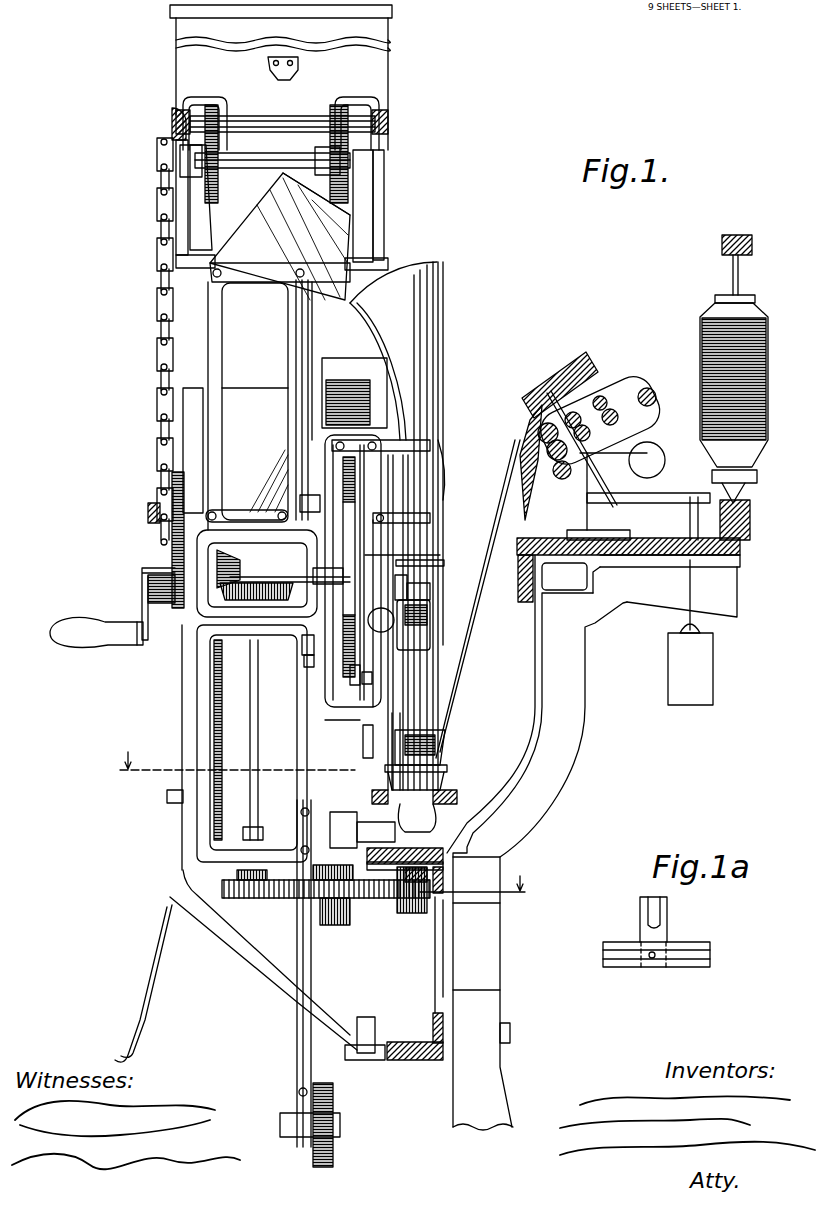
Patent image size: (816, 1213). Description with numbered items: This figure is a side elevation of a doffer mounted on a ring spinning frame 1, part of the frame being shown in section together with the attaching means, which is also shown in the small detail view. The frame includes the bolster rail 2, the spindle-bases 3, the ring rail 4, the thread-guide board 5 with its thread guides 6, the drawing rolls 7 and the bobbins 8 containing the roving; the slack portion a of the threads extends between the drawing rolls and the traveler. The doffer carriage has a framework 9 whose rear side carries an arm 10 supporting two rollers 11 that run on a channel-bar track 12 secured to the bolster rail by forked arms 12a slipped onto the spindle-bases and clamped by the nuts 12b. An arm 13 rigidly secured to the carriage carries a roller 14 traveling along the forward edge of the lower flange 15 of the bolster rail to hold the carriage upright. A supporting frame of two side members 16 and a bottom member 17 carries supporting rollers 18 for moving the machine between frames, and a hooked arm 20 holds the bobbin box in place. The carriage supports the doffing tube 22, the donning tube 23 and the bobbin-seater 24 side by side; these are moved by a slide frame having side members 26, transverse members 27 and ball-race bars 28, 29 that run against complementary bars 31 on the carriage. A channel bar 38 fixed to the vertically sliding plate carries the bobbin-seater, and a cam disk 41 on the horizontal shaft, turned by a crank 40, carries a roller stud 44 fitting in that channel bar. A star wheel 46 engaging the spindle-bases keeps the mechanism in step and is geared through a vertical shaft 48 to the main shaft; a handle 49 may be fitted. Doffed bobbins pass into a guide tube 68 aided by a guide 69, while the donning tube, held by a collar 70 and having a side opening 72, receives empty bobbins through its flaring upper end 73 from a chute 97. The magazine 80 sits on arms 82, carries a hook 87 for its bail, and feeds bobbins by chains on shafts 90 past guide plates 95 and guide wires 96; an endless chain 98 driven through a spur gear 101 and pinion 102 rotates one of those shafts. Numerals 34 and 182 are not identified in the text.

In FIG. 1, the spinning frame 1 is at (598, 758).
In FIG. 1, the bolster rail 2 is at (440, 856).
In FIG. 1, the spindle-bases 3 is at (409, 914).
In FIG. 1, the ring rail 4 is at (462, 783).
In FIG. 1, the thread-guide board 5 is at (533, 463).
In FIG. 1, the thread guides 6 is at (546, 430).
In FIG. 1, the drawing rolls 7 is at (558, 463).
In FIG. 1, the bobbins containing the roving 8 is at (766, 400).
In FIG. 1, the carriage frame 9 is at (229, 747).
In FIG. 1, the arm 10 is at (348, 830).
In FIG. 1, the rollers 11 is at (378, 825).
In FIG. 1, the track 12 is at (360, 866).
In FIG. 1A, the track 12 is at (686, 964).
In FIG. 1A, the arms 12a is at (668, 930).
In FIG. 1, the nuts 12b is at (430, 874).
In FIG. 1, the arm 13 is at (258, 972).
In FIG. 1, the roller 14 is at (367, 1061).
In FIG. 1, the lower flange 15 is at (415, 1061).
In FIG. 1, the side members 16 is at (297, 1026).
In FIG. 1, the bottom member 17 is at (300, 1150).
In FIG. 1, the supporting rollers 18 is at (332, 1150).
In FIG. 1, the arm 20 is at (153, 978).
In FIG. 1, the doffing tube 22 is at (441, 581).
In FIG. 1, the donning tube 23 is at (429, 492).
In FIG. 1, the bobbin-seater 24 is at (399, 639).
In FIG. 1, the side members 26 is at (333, 718).
In FIG. 1, the transverse members 27 is at (351, 432).
In FIG. 1, the transverse bar 28 is at (318, 504).
In FIG. 1, the transverse bar 29 is at (306, 648).
In FIG. 1, the bars 31 is at (310, 538).
In FIG. 1, the bevel gear 34 is at (222, 585).
In FIG. 1, the channel bar 38 is at (356, 685).
In FIG. 1, the crank 40 is at (106, 626).
In FIG. 1, the cam disk 41 is at (365, 560).
In FIG. 1, the roller stud 44 is at (368, 678).
In FIG. 1, the star wheel 46 is at (376, 901).
In FIG. 1, the vertical shaft 48 is at (254, 733).
In FIG. 1, the handle 49 is at (238, 512).
In FIG. 1, the guide tube 68 is at (218, 684).
In FIG. 1, the guide 69 is at (346, 358).
In FIG. 1, the collar 70 is at (431, 446).
In FIG. 1, the opening 72 is at (430, 592).
In FIG. 1, the flaring upper end 73 is at (393, 284).
In FIG. 1, the magazine 80 is at (390, 84).
In FIG. 1, the arms 82 is at (362, 230).
In FIG. 1, the hook 87 is at (298, 61).
In FIG. 1, the shafts 90 is at (276, 163).
In FIG. 1, the guide plates 95 is at (377, 192).
In FIG. 1, the guide wires 96 is at (214, 140).
In FIG. 1, the chute 97 is at (312, 232).
In FIG. 1, the endless chain 98 is at (157, 426).
In FIG. 1, the spur gear 101 is at (172, 543).
In FIG. 1, the pinion 102 is at (178, 604).
In FIG. 1, the column 182 is at (218, 338).
In FIG. 1, the slack portion of the threads a is at (452, 718).